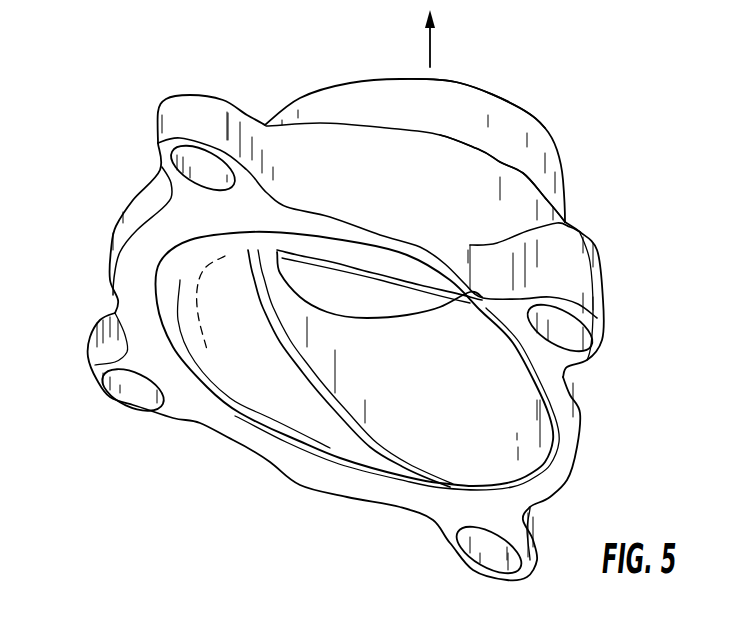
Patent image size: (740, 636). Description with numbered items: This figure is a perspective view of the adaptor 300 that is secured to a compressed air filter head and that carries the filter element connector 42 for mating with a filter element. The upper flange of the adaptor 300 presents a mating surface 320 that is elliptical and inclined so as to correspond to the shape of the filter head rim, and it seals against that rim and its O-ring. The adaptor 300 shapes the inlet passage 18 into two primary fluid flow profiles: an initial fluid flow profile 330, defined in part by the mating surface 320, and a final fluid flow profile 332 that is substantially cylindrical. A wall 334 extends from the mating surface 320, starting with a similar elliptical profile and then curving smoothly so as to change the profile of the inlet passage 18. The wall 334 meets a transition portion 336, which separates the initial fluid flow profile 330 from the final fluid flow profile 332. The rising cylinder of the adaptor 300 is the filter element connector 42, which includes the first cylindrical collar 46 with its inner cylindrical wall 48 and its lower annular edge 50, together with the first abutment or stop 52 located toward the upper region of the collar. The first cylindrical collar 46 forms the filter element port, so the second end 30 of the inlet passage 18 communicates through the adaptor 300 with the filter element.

The inlet passage 18 is at (432, 444).
The second end 30 is at (395, 434).
The filter element connector 42 is at (334, 65).
The first cylindrical collar 46 is at (521, 172).
The inner cylindrical wall 48 is at (395, 297).
The lower annular edge 50 is at (505, 102).
The first abutment or stop 52 is at (340, 313).
The adaptor 300 is at (632, 289).
The mating surface 320 is at (560, 414).
The initial fluid flow profile 330 is at (195, 289).
The final fluid flow profile 332 is at (351, 399).
The wall 334 is at (240, 347).
The transition portion 336 is at (288, 348).